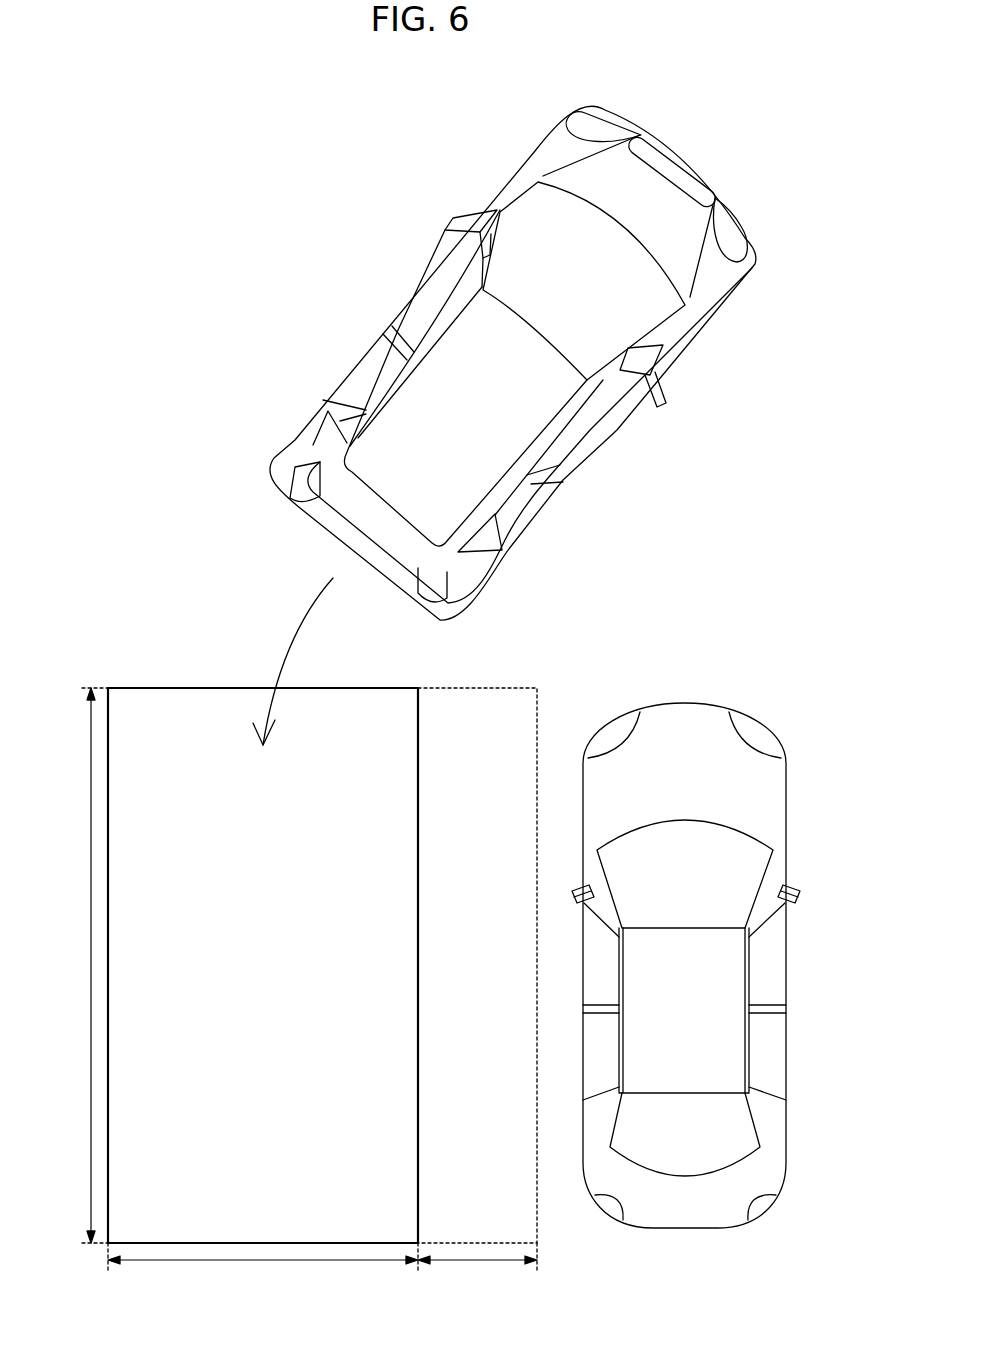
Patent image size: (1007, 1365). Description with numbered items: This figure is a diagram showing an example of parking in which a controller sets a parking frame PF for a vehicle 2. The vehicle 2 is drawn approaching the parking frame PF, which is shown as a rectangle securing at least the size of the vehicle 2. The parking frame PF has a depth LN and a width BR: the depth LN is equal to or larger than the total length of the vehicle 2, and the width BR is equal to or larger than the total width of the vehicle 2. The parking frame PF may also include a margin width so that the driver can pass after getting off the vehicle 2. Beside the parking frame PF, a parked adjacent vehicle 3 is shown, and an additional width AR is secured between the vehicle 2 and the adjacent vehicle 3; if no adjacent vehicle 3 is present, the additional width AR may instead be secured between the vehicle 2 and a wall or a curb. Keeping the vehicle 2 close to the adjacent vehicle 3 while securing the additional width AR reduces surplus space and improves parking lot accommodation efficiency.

The vehicle 2 is at (363, 355).
The adjacent vehicle 3 is at (692, 703).
The parking frame PF is at (187, 688).
The depth LN is at (77, 965).
The width BR is at (263, 1270).
The additional width AR is at (477, 1270).